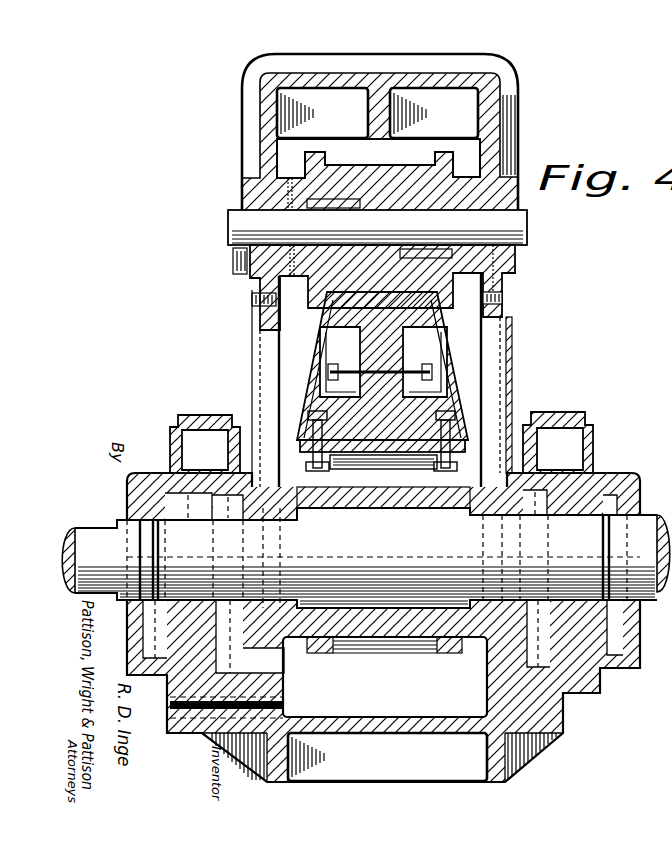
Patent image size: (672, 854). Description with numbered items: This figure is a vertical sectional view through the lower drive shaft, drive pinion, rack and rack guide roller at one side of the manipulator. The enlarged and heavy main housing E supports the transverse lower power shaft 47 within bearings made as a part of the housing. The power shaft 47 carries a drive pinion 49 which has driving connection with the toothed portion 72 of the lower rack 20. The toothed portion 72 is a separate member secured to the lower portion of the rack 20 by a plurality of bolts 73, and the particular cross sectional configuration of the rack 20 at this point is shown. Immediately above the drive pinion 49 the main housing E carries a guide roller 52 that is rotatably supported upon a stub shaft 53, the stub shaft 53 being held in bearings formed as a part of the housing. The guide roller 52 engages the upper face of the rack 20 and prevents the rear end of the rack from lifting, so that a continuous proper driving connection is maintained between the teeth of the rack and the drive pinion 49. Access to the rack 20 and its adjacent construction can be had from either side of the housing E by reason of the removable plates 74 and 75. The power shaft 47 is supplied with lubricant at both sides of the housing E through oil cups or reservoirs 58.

The main housing E is at (270, 112).
The guide roller 52 is at (323, 177).
The stub shaft 53 is at (253, 224).
The lower rack bar 20 is at (258, 280).
The removable plate 75 is at (252, 332).
The bolts 73 is at (305, 423).
The removable plate 74 is at (510, 313).
The oil cups or reservoirs 58 is at (188, 447).
The drive pinion 49 is at (388, 488).
The toothed portion 72 is at (413, 480).
The power shaft 47 is at (366, 558).